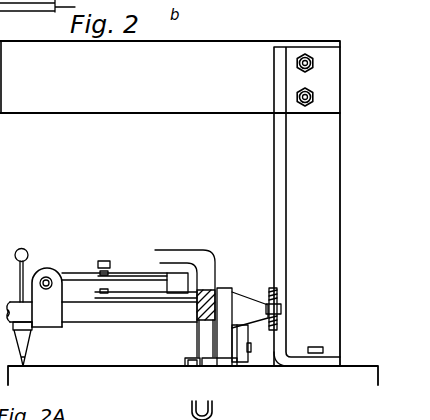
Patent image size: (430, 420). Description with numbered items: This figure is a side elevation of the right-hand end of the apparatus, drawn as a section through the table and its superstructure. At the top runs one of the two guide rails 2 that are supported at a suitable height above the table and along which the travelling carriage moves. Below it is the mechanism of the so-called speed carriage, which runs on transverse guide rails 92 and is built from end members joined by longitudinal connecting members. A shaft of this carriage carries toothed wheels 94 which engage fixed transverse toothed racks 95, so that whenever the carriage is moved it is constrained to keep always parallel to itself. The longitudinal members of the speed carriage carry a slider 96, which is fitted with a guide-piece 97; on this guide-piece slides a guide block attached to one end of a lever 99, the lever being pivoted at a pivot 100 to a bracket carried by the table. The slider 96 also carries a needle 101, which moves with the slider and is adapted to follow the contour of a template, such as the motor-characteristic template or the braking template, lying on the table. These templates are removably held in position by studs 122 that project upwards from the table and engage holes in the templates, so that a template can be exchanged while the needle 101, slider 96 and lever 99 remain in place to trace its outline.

The guide rail 2 is at (178, 62).
The transverse guide rails 92 is at (240, 362).
The toothed wheels 94 is at (270, 296).
The fixed transverse toothed racks 95 is at (276, 353).
The slider 96 is at (32, 264).
The guide-piece 97 is at (50, 278).
The lever 99 is at (110, 293).
The pivot 100 is at (103, 262).
The needle 101 is at (24, 368).
The studs 122 is at (187, 366).